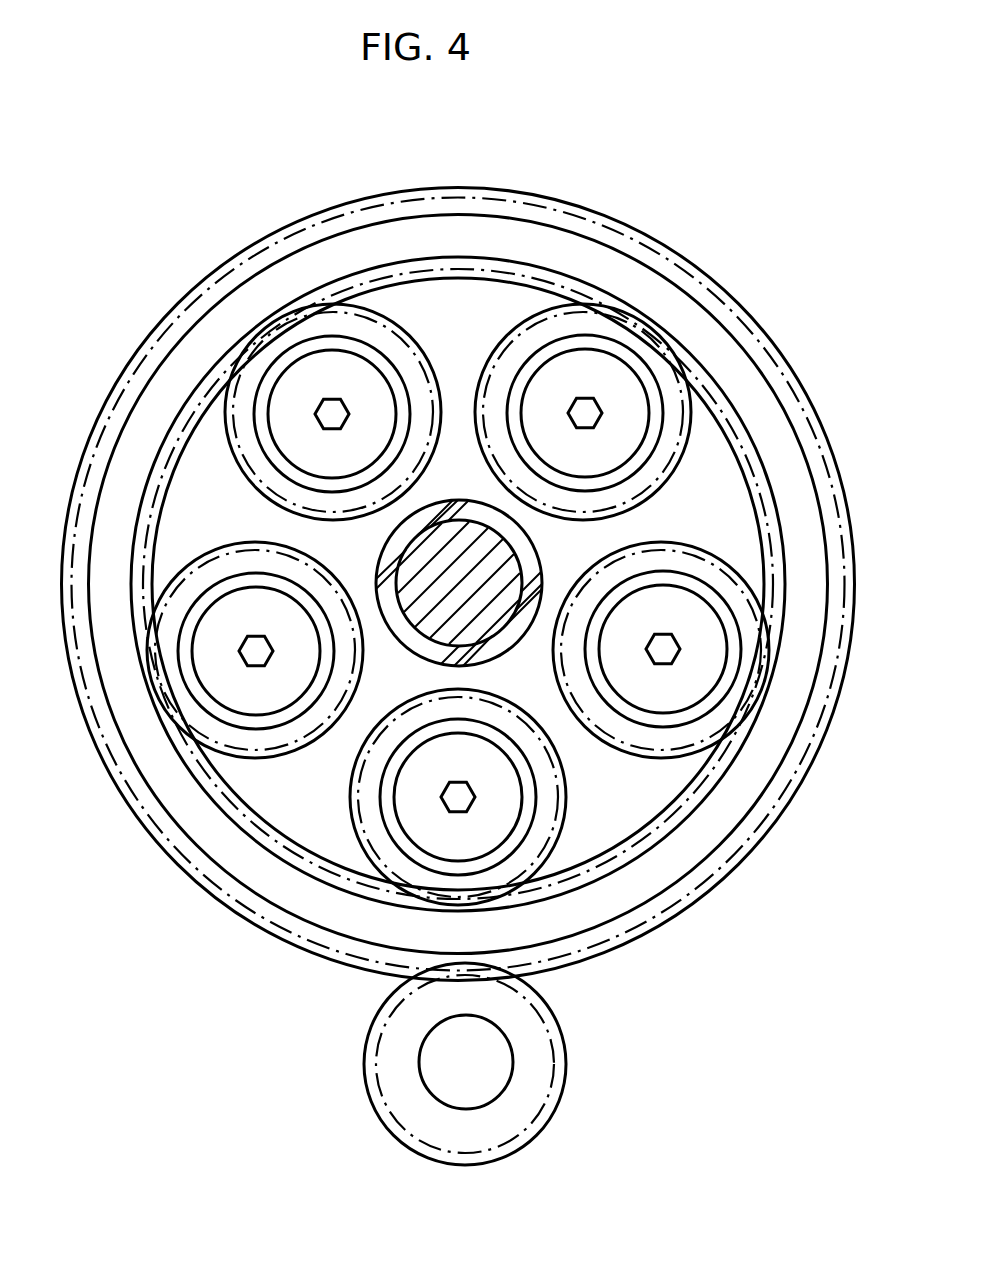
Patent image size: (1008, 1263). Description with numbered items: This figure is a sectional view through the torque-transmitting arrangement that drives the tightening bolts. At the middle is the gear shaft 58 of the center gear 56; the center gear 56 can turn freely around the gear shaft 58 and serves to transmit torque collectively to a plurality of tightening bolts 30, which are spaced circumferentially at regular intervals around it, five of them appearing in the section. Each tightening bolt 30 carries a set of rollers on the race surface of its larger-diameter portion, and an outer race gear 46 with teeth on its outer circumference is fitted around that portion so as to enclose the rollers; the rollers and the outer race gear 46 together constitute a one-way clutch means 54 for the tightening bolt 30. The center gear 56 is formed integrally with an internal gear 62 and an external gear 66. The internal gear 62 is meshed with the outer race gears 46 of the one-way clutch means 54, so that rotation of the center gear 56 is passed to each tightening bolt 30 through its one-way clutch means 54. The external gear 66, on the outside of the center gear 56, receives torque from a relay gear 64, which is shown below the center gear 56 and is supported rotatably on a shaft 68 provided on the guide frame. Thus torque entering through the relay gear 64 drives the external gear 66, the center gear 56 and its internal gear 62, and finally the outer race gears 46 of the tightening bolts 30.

The tightening bolt 30 is at (383, 305).
The one-way clutch means 54 is at (513, 573).
The outer race gear 46 is at (250, 380).
The center gear 56 is at (655, 290).
The gear shaft 58 is at (478, 608).
The internal gear 62 is at (612, 868).
The relay gear 64 is at (403, 1077).
The external gear 66 is at (745, 852).
The shaft 68 is at (490, 1065).